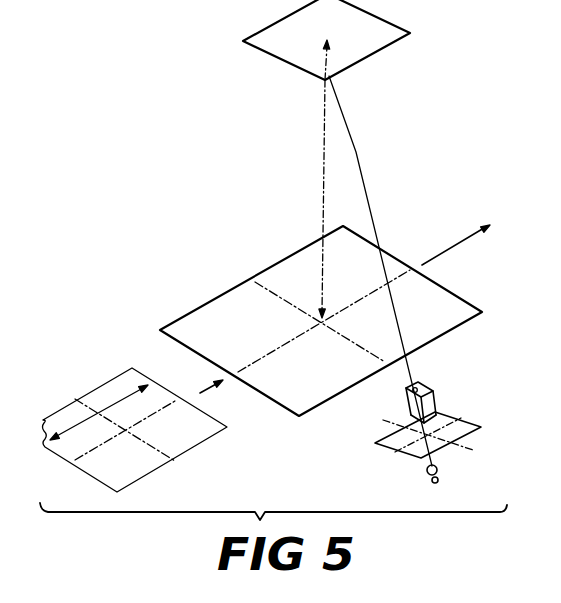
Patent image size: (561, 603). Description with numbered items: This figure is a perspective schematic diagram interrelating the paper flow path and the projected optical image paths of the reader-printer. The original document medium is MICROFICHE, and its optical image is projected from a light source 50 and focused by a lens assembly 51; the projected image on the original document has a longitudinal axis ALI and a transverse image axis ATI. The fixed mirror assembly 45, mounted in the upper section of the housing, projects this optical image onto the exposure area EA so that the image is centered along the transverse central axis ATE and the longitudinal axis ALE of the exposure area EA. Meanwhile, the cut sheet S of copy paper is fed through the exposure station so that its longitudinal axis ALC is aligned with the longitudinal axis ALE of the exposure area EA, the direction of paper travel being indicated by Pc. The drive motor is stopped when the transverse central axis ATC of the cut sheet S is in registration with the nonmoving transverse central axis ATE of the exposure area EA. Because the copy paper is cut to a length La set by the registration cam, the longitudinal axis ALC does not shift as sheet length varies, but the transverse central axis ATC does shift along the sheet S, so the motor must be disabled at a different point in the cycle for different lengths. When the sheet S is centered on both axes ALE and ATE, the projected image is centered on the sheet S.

The fixed mirror assembly 45 is at (395, 47).
The exposure area EA is at (505, 281).
The cut sheet of copy paper S is at (147, 478).
The lens assembly 51 is at (431, 400).
The light source 50 is at (438, 470).
The direction of travel Pc is at (197, 390).
The length of cut sheet La is at (99, 416).
The transverse central axis of exposure area ATE is at (344, 336).
The longitudinal axis of exposure area ALE is at (268, 353).
The longitudinal axis of copy paper ALC is at (153, 422).
The transverse central axis of copy paper ATC is at (143, 444).
The projected image longitudinal axis ALI is at (463, 415).
The transverse image axis ATI is at (453, 442).
The microfiche MICROFICHE is at (403, 456).